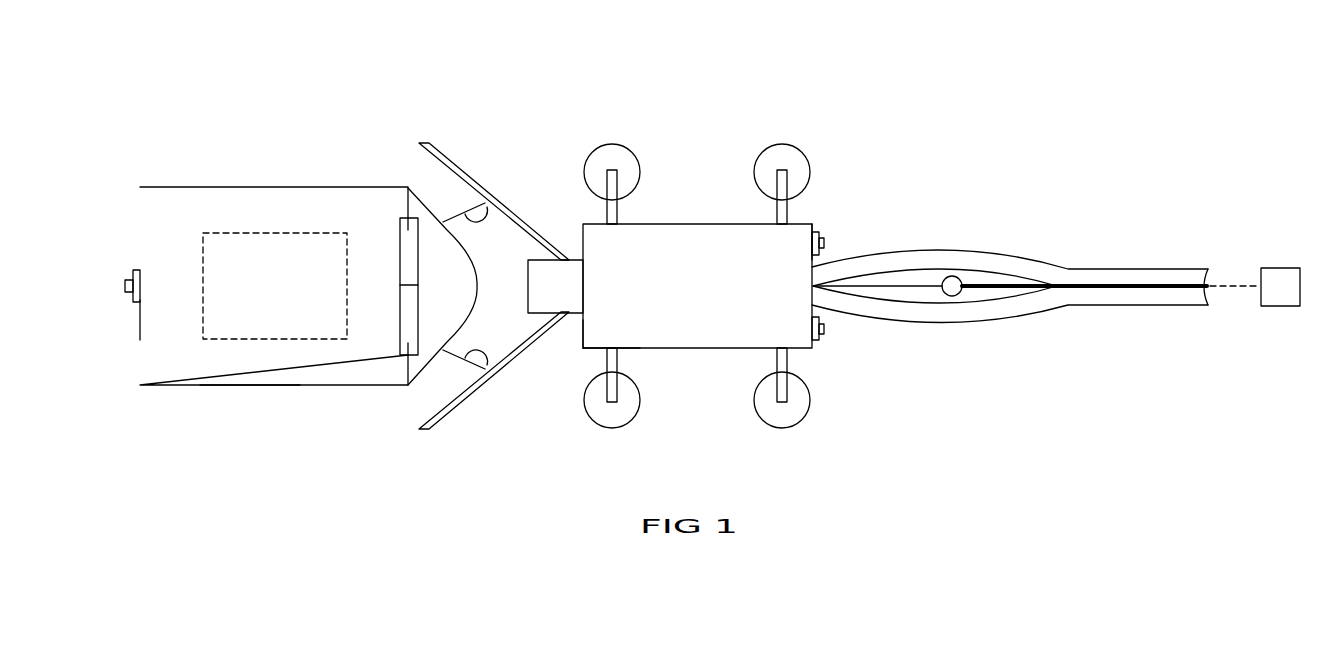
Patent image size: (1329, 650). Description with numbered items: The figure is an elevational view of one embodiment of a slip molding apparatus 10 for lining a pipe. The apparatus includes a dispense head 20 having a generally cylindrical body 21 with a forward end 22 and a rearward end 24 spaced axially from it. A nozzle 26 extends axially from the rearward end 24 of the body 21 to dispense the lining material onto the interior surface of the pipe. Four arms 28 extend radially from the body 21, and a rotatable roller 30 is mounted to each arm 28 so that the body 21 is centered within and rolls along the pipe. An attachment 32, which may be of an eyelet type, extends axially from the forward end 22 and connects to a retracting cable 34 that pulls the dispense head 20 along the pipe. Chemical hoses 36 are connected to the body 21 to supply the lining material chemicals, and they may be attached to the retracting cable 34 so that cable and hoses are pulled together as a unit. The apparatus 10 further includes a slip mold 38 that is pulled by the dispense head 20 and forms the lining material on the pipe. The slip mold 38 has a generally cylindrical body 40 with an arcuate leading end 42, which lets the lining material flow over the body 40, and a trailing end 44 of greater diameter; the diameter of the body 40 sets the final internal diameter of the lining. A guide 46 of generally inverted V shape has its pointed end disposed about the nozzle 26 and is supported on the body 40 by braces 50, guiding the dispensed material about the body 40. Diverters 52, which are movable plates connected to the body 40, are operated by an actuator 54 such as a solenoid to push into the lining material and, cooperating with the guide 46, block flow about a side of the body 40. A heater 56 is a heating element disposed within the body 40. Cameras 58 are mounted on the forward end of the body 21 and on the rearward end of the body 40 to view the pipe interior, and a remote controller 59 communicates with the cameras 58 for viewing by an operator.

The slip molding apparatus 10 is at (877, 101).
The dispense head 20 is at (684, 223).
The body 21 is at (602, 335).
The forward end 22 is at (813, 224).
The rearward end 24 is at (583, 335).
The nozzle 26 is at (545, 285).
The arms 28 is at (617, 212).
The rotatable rollers 30 is at (612, 152).
The attachment 32 is at (900, 288).
The retracting cable 34 is at (1000, 283).
The chemical hoses 36 is at (1030, 270).
The slip mold 38 is at (270, 188).
The body 40 is at (268, 363).
The leading end 42 is at (425, 203).
The trailing end 44 is at (140, 348).
The guide 46 is at (455, 165).
The braces 50 is at (498, 206).
The diverters 52 is at (403, 202).
The actuator 54 is at (400, 250).
The heater 56 is at (232, 233).
The cameras 58 is at (133, 274).
The remote controller 59 is at (1280, 298).